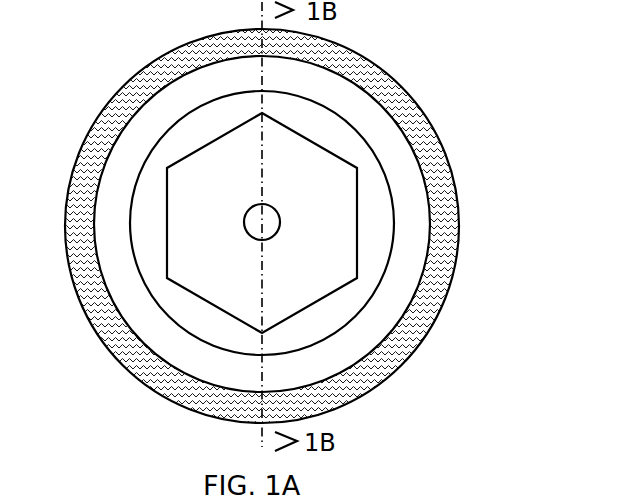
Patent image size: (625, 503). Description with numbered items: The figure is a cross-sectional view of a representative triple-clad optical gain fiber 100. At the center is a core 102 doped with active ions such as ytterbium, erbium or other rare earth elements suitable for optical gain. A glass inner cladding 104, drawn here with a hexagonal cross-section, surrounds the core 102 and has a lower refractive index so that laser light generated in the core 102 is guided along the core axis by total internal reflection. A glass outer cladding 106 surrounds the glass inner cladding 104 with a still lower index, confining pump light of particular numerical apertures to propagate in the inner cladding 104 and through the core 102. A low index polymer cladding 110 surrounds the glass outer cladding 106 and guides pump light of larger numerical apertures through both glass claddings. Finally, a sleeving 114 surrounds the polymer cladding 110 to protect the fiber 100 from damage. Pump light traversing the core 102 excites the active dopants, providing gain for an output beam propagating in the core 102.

The triple-clad optical gain fiber 100 is at (498, 343).
The core 102 is at (244, 219).
The glass inner cladding 104 is at (335, 230).
The glass outer cladding 106 is at (347, 147).
The low index polymer cladding 110 is at (395, 155).
The sleeving 114 is at (443, 178).